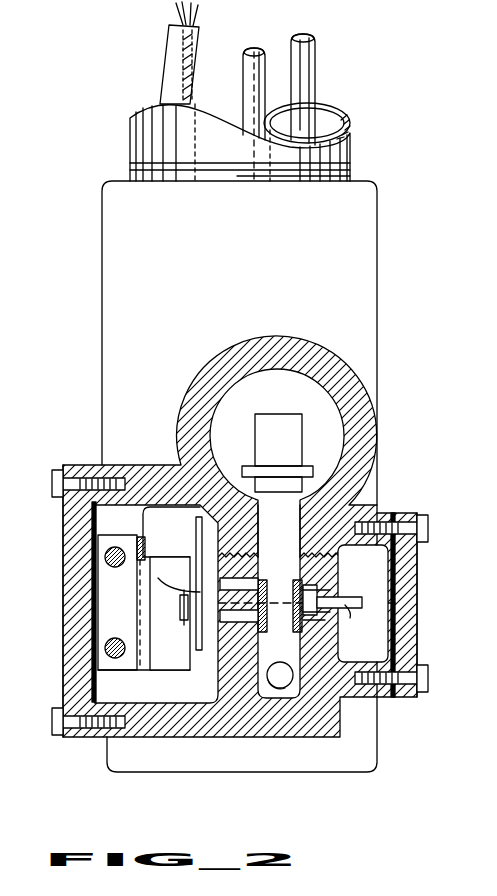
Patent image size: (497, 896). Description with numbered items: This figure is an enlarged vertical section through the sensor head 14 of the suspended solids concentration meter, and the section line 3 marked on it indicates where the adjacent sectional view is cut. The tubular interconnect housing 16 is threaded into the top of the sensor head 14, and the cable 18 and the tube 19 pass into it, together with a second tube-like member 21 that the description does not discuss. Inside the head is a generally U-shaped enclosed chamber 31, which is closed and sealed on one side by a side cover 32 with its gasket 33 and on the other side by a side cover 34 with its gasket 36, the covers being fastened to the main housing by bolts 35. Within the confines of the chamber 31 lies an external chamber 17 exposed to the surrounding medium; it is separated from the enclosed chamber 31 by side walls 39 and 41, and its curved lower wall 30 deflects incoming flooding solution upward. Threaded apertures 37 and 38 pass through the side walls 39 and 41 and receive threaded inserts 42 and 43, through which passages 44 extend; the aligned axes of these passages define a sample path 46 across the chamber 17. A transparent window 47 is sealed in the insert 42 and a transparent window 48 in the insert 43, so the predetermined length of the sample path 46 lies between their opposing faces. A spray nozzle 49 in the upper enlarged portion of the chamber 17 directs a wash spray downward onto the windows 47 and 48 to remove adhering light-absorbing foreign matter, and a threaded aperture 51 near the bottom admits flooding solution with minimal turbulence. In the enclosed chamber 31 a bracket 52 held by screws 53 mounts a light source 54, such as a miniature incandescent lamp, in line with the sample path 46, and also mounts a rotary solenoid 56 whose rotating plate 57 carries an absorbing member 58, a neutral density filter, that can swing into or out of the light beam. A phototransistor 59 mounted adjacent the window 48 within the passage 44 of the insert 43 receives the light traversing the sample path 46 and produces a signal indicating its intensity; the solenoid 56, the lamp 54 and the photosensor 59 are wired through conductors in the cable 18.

The section line 3- 3 is at (254, 112).
The sensor head 14 is at (405, 314).
The tubular interconnect housing 16 is at (352, 142).
The external chamber 17 is at (342, 428).
The cable 18 is at (162, 81).
The tube 19 is at (318, 85).
The connector pin 21 is at (243, 95).
The curved lower wall 30 is at (290, 700).
The U-shaped chamber 31 is at (90, 520).
The side cover 32 is at (64, 597).
The gasket 33 is at (92, 570).
The side cover 34 is at (410, 563).
The bolts 35 is at (56, 470).
The gasket 36 is at (415, 583).
The threaded aperture 37 is at (250, 560).
The threaded aperture 38 is at (305, 558).
The side wall 39 is at (232, 682).
The side wall 41 is at (318, 678).
The threaded insert 42 is at (228, 645).
The threaded insert 43 is at (330, 642).
The passages 44 is at (267, 615).
The sample path 46 is at (332, 577).
The transparent window 47 is at (179, 580).
The transparent window 48 is at (330, 594).
The spray nozzle 49 is at (294, 447).
The threaded aperture 51 is at (275, 690).
The bracket 52 is at (100, 620).
The screws 53 is at (108, 556).
The light source 54 is at (184, 630).
The rotary solenoid 56 is at (182, 600).
The rotating plate 57 is at (192, 562).
The absorbing member 58 is at (196, 530).
The phototransistor 59 is at (350, 618).